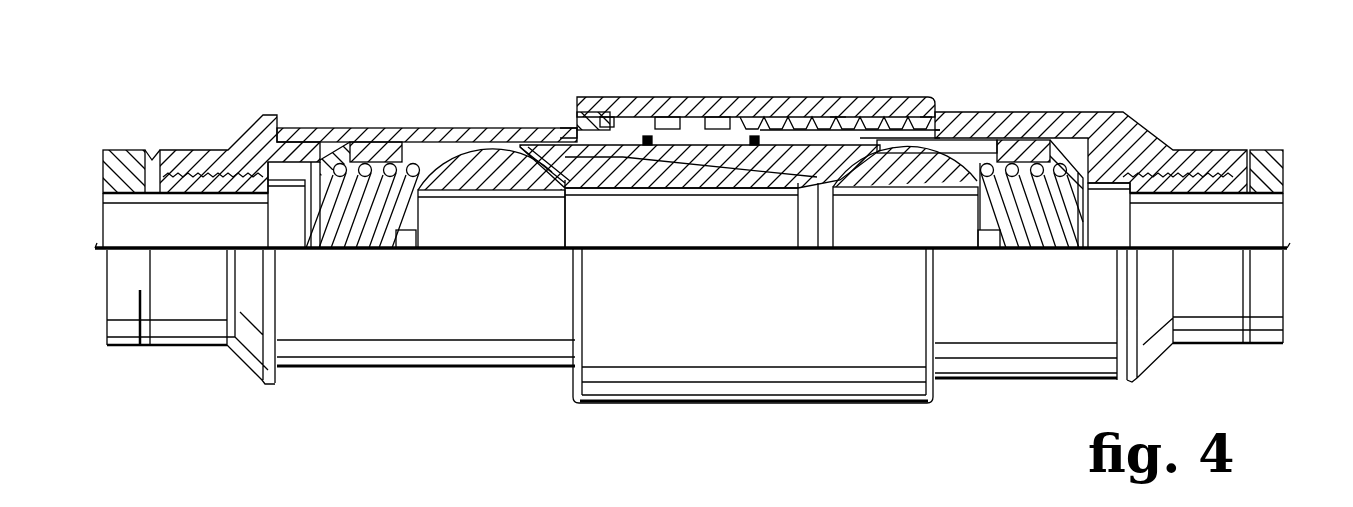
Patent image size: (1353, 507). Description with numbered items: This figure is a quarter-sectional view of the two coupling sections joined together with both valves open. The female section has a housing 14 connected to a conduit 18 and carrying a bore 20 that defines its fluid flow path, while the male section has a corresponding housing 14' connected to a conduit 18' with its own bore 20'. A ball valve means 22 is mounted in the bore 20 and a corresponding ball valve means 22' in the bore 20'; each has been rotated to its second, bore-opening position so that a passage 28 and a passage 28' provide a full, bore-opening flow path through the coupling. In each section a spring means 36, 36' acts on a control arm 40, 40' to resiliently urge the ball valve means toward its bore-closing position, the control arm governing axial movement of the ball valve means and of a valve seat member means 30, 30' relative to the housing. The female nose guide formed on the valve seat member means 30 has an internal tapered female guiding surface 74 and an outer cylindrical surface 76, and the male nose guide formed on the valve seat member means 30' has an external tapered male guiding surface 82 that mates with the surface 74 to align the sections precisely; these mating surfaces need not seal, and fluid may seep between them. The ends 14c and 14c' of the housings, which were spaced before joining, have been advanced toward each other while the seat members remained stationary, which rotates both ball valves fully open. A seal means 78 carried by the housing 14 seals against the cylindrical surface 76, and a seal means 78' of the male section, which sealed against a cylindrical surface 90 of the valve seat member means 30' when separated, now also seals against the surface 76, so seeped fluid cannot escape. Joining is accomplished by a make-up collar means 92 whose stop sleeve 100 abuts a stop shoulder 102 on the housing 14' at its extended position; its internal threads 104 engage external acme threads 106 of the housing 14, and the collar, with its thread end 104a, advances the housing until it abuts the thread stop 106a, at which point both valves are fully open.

The housing 14 is at (1109, 333).
The housing 14' is at (341, 333).
The end 14c is at (663, 82).
The end 14c' is at (735, 97).
The conduit 18 is at (1206, 164).
The conduit 18' is at (184, 164).
The bore 20 is at (1109, 215).
The bore 20' is at (286, 205).
The ball valve means 22 is at (937, 113).
The ball valve means 22' is at (515, 132).
The passage 28 is at (905, 197).
The passage 28' is at (491, 198).
The valve seat member means 30 is at (850, 81).
The valve seat member means 30' is at (429, 293).
The spring means 36 is at (1091, 151).
The spring means 36' is at (298, 164).
The control arm 40 is at (1026, 236).
The control arm 40' is at (363, 237).
The female guiding surface 74 is at (672, 160).
The outer cylindrical surface 76 is at (795, 168).
The seal means 78 is at (772, 99).
The seal means 78' is at (651, 84).
The male guiding surface 82 is at (672, 158).
The cylindrical surface 90 is at (598, 150).
The make-up collar means 92 is at (812, 117).
The stop sleeve 100 is at (565, 113).
The stop shoulder 102 is at (593, 120).
The internal threads 104 is at (937, 120).
The thread flank 104a is at (920, 117).
The external threads 106 is at (837, 117).
The thread stop 106a is at (940, 120).